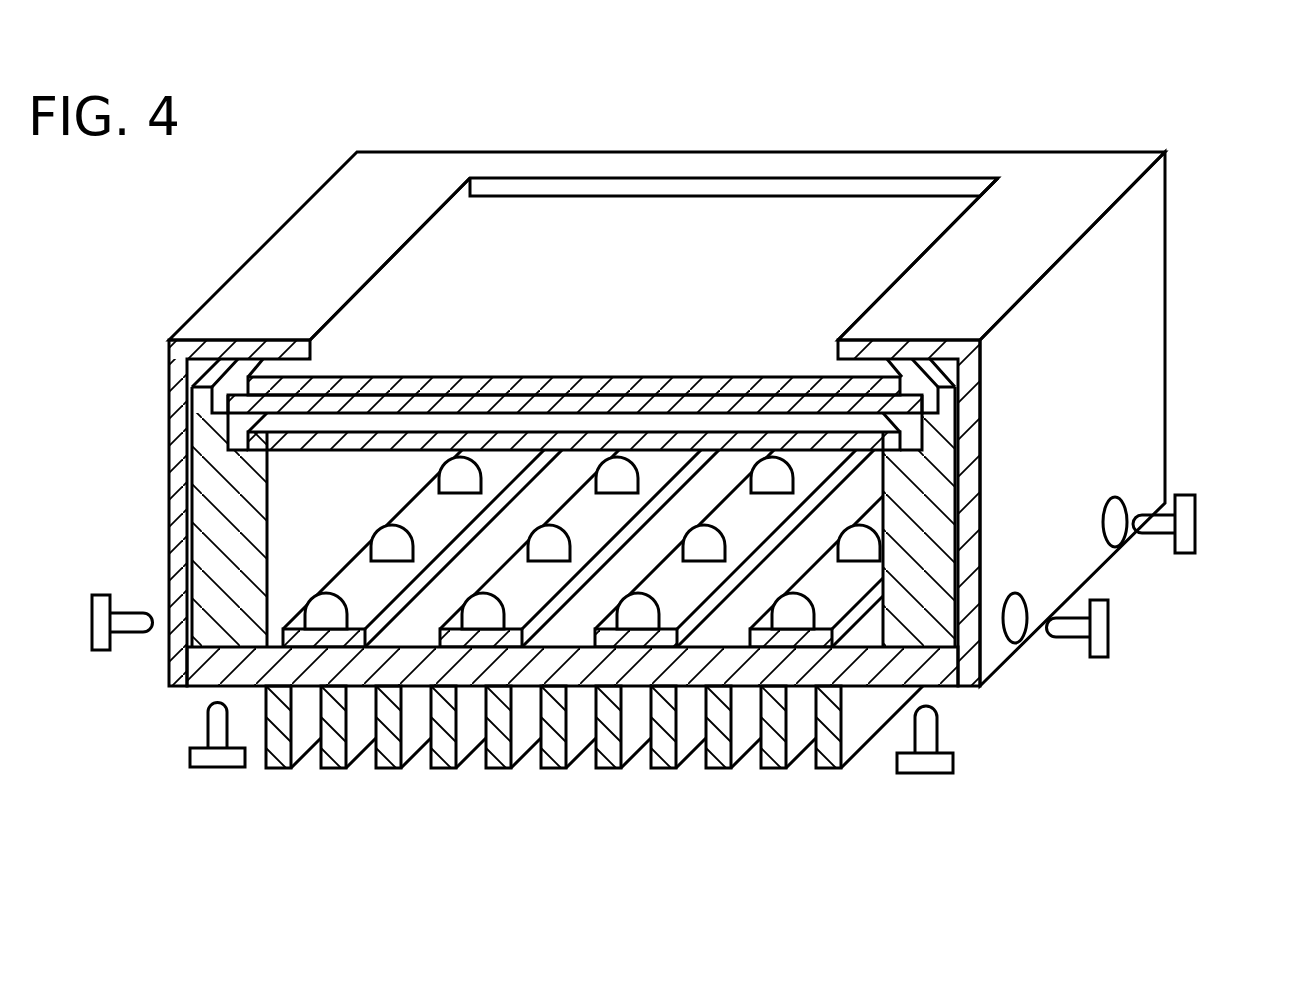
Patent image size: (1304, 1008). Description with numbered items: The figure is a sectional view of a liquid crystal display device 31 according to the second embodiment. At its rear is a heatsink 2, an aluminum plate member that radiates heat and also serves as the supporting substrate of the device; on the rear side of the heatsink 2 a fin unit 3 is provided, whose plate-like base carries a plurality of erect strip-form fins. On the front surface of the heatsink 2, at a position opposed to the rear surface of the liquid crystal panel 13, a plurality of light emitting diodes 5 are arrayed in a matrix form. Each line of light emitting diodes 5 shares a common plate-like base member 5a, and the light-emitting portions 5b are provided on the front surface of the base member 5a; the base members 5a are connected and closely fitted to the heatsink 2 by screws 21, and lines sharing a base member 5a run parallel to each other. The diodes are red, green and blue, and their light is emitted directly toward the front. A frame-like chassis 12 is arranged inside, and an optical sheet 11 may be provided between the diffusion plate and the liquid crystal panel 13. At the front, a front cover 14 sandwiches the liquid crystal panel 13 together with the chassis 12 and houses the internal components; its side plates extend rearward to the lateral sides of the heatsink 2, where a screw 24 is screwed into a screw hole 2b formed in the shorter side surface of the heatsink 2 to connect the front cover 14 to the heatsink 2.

The liquid crystal display device 31 is at (1188, 131).
The front cover 14 is at (330, 247).
The liquid crystal panel 13 is at (656, 222).
The optical sheet 11 is at (265, 438).
The chassis 12 is at (222, 518).
The heatsink 2 is at (192, 672).
The screw hole 2b is at (1115, 515).
The screw 24 is at (100, 623).
The screw 21 is at (205, 754).
The fin unit 3 is at (298, 744).
The light emitting diode 5 is at (657, 665).
The base member 5a is at (500, 640).
The light-emitting portion 5b is at (473, 617).